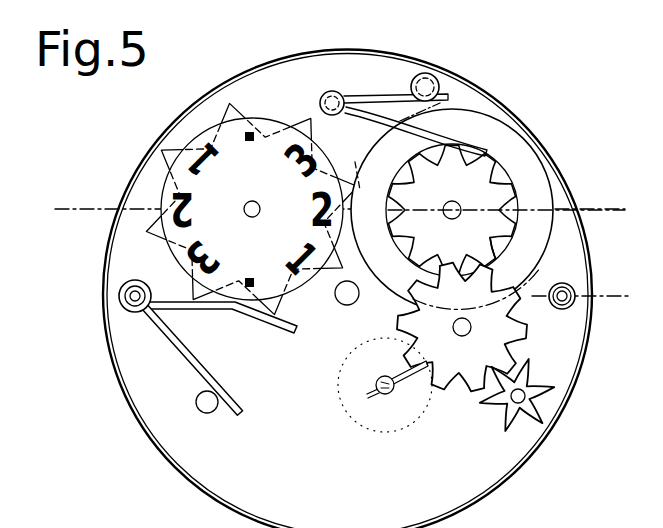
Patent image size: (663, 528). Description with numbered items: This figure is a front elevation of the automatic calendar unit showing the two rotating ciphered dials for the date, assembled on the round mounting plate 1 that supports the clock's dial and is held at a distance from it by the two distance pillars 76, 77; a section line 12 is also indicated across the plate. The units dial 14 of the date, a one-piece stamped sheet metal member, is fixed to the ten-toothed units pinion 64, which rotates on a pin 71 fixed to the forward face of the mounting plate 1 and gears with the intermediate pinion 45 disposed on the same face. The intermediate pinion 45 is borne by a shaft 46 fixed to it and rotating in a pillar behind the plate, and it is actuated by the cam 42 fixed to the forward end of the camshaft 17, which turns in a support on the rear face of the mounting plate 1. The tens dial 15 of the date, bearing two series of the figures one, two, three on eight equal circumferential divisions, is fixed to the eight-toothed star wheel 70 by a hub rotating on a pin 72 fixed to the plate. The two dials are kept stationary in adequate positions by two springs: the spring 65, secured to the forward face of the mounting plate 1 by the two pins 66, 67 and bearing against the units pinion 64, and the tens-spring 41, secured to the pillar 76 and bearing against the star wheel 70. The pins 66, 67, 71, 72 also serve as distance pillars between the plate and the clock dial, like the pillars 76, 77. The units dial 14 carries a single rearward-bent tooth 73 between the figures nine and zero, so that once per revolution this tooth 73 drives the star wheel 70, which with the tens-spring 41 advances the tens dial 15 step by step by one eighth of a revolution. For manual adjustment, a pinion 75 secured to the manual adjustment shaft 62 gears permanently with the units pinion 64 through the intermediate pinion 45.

The mounting plate 1 is at (125, 397).
The section line 12 is at (75, 185).
The units dial of the date 14 is at (528, 152).
The tens dial of the date 15 is at (160, 200).
The camshaft 17 is at (392, 396).
The tens-spring 41 is at (293, 331).
The cam 42 is at (406, 381).
The intermediate pinion 45 is at (530, 331).
The shaft 46 is at (456, 325).
The manual adjustment shaft 62 is at (523, 399).
The units pinion 64 is at (494, 229).
The spring 65 is at (378, 96).
The pin 66 is at (326, 92).
The pin 67 is at (432, 78).
The star wheel 70 is at (147, 238).
The pin 71 is at (453, 208).
The pin 72 is at (246, 204).
The single tooth 73 is at (356, 166).
The pinion 75 is at (513, 427).
The distance pillar 76 is at (125, 298).
The distance pillar 77 is at (575, 299).